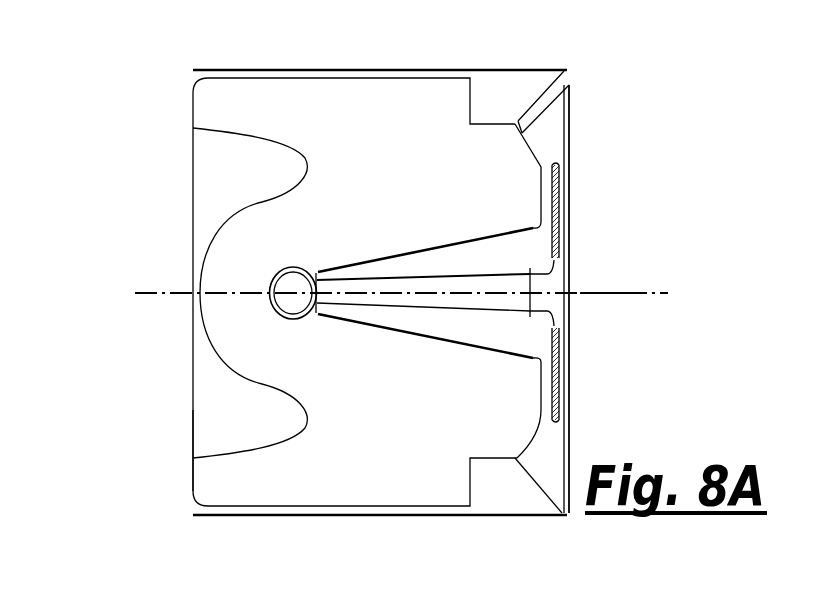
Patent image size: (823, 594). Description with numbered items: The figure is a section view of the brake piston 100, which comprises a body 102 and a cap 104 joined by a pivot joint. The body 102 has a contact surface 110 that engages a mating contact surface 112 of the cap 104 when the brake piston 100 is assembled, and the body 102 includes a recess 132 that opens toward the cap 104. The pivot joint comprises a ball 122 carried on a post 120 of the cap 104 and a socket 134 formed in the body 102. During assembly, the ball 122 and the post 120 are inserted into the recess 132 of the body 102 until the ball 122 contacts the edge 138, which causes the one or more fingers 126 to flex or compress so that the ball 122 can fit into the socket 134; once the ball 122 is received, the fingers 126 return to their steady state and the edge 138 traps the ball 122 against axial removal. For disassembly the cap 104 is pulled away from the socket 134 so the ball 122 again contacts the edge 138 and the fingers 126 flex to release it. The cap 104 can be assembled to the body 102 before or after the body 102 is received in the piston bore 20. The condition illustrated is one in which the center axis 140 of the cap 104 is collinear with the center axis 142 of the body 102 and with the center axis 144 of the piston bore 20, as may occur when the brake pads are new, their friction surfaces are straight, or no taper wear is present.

The piston bore 20 is at (192, 503).
The brake piston 100 is at (230, 69).
The body 102 is at (387, 104).
The cap 104 is at (597, 142).
The contact surface 110 is at (568, 83).
The mating contact surface 112 is at (533, 158).
The post 120 is at (429, 300).
The ball 122 is at (291, 305).
The fingers 126 is at (296, 282).
The recess 132 is at (449, 262).
The socket 134 is at (275, 275).
The edge 138 is at (320, 272).
The center axis of the cap 140 is at (655, 293).
The center axis of the body 142 is at (613, 295).
The center axis of the piston bore 144 is at (590, 293).